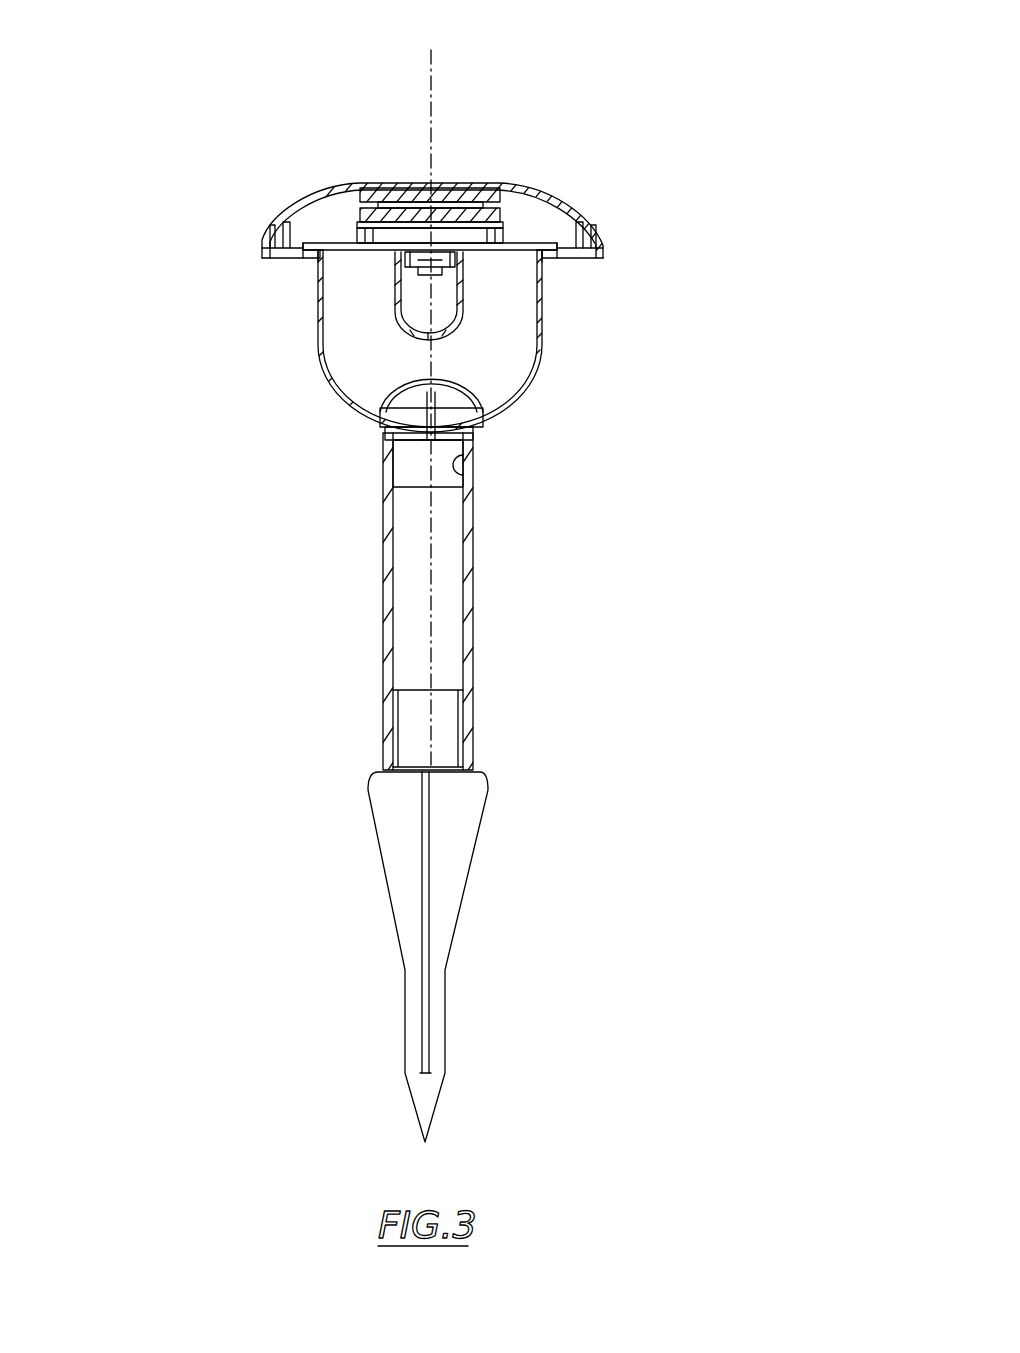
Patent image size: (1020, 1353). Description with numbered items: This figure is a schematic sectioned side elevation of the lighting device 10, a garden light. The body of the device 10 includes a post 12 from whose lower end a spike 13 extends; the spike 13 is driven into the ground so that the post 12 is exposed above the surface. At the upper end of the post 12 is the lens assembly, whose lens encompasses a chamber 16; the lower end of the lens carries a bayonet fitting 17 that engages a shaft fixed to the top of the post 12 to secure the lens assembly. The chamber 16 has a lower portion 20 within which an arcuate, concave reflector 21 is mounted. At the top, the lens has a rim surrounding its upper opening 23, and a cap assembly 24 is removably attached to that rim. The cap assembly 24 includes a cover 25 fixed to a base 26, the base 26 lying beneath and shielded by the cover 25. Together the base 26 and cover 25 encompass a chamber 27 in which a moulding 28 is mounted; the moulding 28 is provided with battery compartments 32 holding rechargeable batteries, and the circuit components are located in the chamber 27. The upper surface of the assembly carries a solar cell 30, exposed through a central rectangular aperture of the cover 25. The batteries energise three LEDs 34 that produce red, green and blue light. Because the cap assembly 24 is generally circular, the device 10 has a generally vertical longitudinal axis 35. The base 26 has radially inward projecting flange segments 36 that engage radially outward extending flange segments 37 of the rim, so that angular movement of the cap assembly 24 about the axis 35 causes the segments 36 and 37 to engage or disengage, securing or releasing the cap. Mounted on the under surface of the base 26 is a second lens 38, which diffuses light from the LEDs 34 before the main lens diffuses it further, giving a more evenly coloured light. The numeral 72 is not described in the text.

The lighting device 10 is at (473, 588).
The post 12 is at (499, 609).
The spike 13 is at (440, 1008).
The chamber 16 is at (386, 376).
The bayonet fitting 17 is at (472, 482).
The lower portion 20 is at (427, 310).
The arcuate reflector 21 is at (447, 390).
The upper opening 23 is at (332, 303).
The cap assembly 24 is at (430, 195).
The cover 25 is at (530, 188).
The base 26 is at (280, 257).
The chamber 27 is at (320, 222).
The moulding 28 is at (400, 188).
The solar cell 30 is at (437, 188).
The battery compartments 32 is at (362, 223).
The LEDs 34 is at (440, 270).
The longitudinal axis 35 is at (432, 74).
The flange segments 36 is at (312, 263).
The flange segments 37 is at (328, 257).
The second lens 38 is at (472, 290).
The cap flange 72 is at (575, 262).